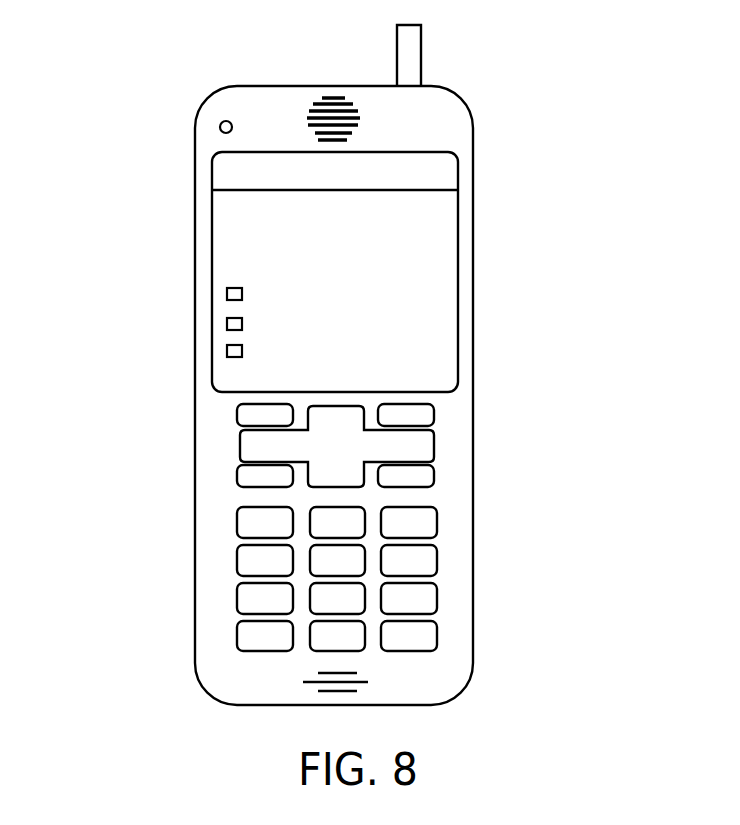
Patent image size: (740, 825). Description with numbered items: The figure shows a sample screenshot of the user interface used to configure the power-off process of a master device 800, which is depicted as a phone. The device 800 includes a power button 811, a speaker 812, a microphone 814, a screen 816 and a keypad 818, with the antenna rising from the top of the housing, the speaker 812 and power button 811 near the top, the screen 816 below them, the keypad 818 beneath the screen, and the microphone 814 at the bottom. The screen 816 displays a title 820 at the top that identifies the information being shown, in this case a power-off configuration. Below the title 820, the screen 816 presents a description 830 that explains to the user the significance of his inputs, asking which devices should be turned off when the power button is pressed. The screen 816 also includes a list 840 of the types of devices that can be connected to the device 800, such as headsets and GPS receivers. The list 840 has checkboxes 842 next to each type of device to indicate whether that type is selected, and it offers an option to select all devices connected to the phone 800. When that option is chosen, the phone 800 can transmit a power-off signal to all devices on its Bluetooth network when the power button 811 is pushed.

The master device 800 is at (693, 127).
The power button 811 is at (220, 126).
The speaker 812 is at (310, 117).
The microphone 814 is at (362, 684).
The screen 816 is at (457, 190).
The keypad 818 is at (437, 529).
The title 820 is at (222, 169).
The description 830 is at (220, 207).
The list 840 is at (362, 326).
The checkboxes 842 is at (227, 322).